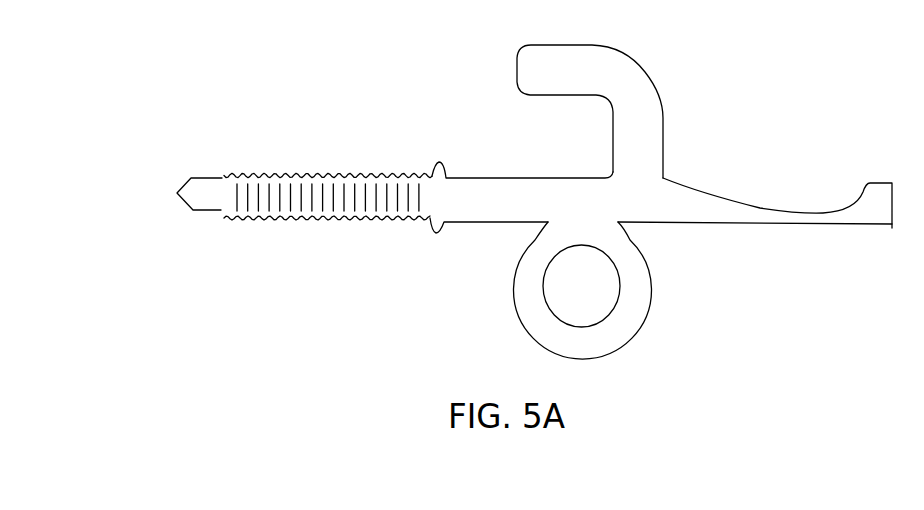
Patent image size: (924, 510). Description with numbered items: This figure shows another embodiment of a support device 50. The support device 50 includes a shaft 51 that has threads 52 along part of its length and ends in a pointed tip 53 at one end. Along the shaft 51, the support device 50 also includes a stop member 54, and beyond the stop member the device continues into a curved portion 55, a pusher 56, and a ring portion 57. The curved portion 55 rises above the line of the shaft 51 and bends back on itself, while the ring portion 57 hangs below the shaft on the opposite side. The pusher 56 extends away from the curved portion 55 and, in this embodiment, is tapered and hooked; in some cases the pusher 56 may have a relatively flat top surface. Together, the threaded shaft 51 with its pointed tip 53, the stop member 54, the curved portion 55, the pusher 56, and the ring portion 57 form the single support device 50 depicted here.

The support device 50 is at (443, 95).
The shaft 51 is at (490, 178).
The threads 52 is at (316, 176).
The pointed tip 53 is at (176, 194).
The stop member 54 is at (441, 229).
The curved portion 55 is at (652, 83).
The pusher 56 is at (760, 206).
The ring portion 57 is at (651, 290).